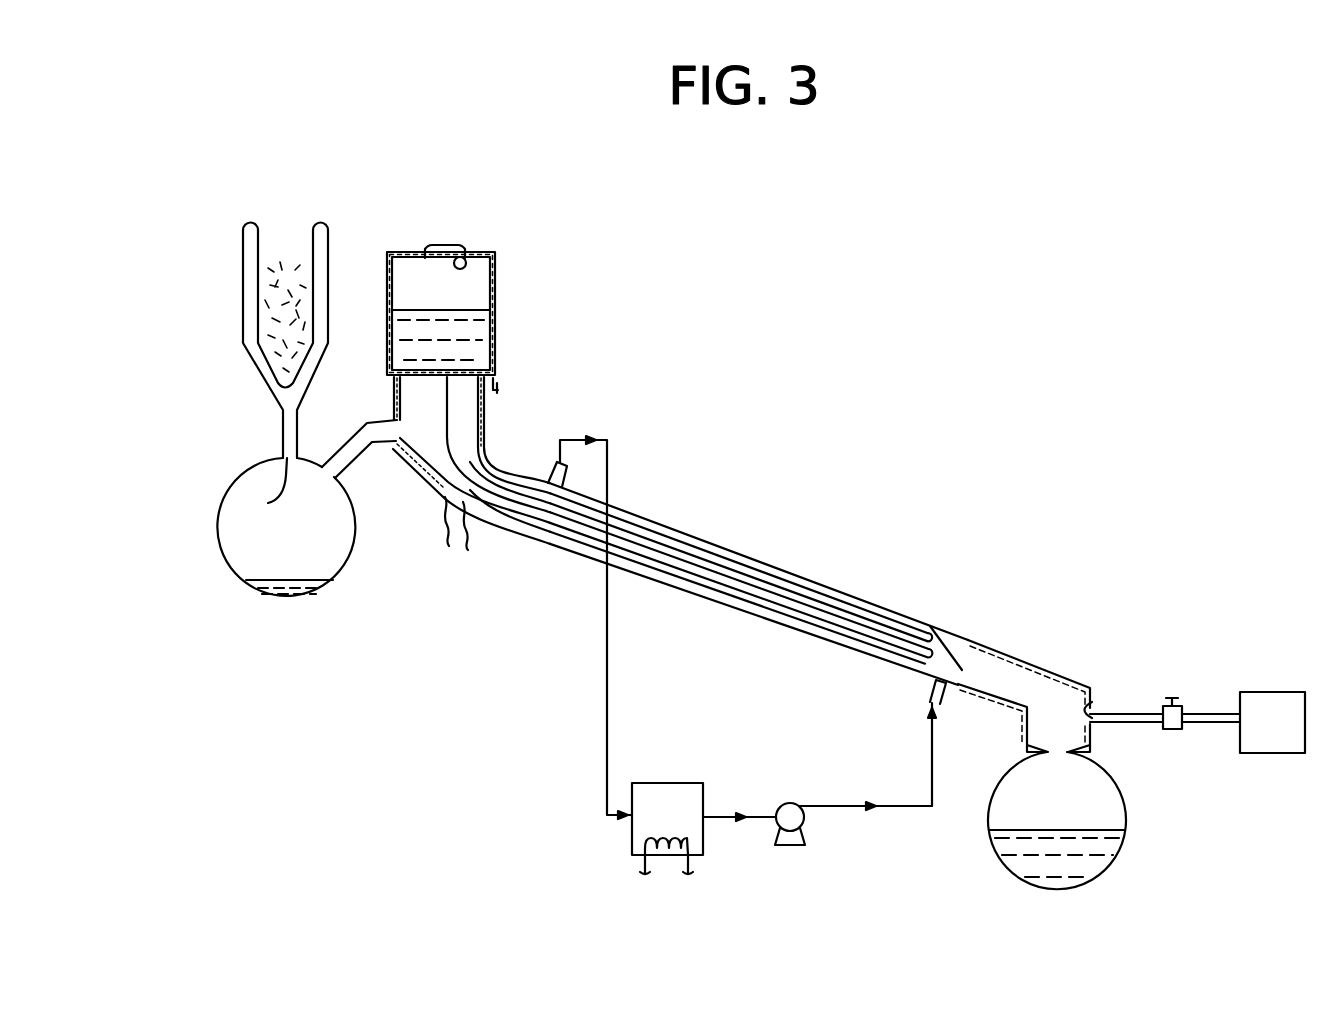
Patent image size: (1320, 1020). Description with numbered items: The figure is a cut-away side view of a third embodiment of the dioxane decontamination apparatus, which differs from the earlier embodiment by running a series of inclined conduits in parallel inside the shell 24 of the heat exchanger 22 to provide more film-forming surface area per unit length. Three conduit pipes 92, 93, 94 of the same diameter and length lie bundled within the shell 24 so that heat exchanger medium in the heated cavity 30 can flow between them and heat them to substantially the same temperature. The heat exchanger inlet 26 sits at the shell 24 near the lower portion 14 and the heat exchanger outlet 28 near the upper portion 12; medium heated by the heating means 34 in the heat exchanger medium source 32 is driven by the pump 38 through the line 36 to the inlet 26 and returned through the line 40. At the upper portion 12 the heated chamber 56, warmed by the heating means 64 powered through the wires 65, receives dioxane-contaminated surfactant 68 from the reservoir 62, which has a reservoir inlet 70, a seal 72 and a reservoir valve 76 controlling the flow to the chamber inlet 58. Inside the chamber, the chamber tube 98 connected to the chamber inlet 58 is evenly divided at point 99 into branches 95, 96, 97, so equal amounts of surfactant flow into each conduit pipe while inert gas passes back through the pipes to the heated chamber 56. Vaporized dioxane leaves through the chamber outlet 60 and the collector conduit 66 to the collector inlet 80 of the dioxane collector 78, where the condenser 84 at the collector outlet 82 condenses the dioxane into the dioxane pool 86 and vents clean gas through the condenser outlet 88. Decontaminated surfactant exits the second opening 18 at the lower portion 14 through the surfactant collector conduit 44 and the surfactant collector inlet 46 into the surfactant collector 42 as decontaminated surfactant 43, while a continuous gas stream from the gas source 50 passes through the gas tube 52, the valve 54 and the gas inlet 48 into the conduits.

The upper portion 12 is at (518, 540).
The lower portion 14 is at (486, 524).
The second opening 18 is at (928, 628).
The heat exchanger 22 is at (643, 518).
The shell 24 is at (673, 586).
The heat exchanger inlet 26 is at (927, 690).
The heat exchanger outlet 28 is at (573, 478).
The heated cavity 30 is at (805, 630).
The heat exchanger medium source 32 is at (650, 816).
The heating means 34 is at (638, 860).
The line 36 is at (885, 805).
The pump 38 is at (788, 845).
The line 40 is at (607, 720).
The surfactant collector 42 is at (1122, 843).
The decontaminated surfactant 43 is at (1083, 867).
The surfactant collector conduit 44 is at (1050, 672).
The surfactant collector inlet 46 is at (1057, 757).
The gas inlet 48 is at (1093, 701).
The gas source 50 is at (1256, 736).
The gas tube 52 is at (1207, 713).
The valve 54 is at (1172, 729).
The heated chamber 56 is at (406, 412).
The chamber inlet 58 is at (470, 402).
The chamber outlet 60 is at (400, 433).
The reservoir 62 is at (495, 283).
The heating means 64 is at (500, 462).
The wires 65 is at (452, 540).
The collector conduit 66 is at (372, 420).
The dioxane-contaminated surfactant 68 is at (480, 332).
The reservoir inlet 70 is at (468, 262).
The seal 72 is at (447, 250).
The reservoir valve 76 is at (497, 386).
The dioxane collector 78 is at (227, 557).
The collector inlet 80 is at (333, 478).
The collector outlet 82 is at (258, 490).
The condenser 84 is at (243, 333).
The dioxane pool 86 is at (284, 594).
The condenser outlet 88 is at (242, 240).
The conduit pipe 92 is at (778, 612).
The conduit pipe 93 is at (822, 613).
The conduit pipe 94 is at (847, 610).
The branch 95 is at (524, 515).
The branch 96 is at (530, 515).
The branch 97 is at (535, 512).
The chamber tube 98 is at (437, 488).
The point 99 is at (503, 478).